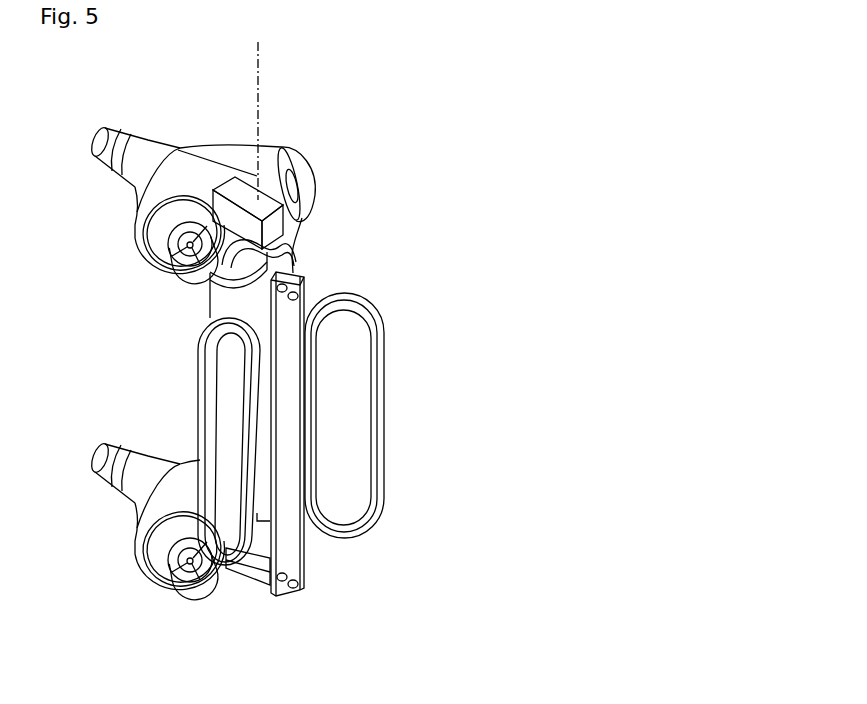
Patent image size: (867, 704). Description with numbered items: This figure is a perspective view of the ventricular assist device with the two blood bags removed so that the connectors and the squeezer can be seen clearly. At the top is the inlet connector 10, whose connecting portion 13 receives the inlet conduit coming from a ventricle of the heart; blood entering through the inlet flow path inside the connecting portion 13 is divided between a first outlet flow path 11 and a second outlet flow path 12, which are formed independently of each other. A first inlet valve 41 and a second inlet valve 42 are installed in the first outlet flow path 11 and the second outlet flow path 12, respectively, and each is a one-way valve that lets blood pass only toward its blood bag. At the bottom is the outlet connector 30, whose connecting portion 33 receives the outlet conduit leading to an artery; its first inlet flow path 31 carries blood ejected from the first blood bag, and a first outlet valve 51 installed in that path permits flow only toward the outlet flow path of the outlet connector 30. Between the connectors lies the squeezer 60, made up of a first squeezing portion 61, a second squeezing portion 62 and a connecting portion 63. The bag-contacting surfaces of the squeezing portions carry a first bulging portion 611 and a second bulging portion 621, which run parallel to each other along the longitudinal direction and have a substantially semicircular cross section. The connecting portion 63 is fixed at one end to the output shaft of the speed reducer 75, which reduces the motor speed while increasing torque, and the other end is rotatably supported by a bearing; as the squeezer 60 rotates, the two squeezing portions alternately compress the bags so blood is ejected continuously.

The inlet connector 10 is at (181, 127).
The first outlet flow path 11 is at (202, 270).
The second outlet flow path 12 is at (308, 190).
The connecting portion 13 is at (113, 160).
The outlet connector 30 is at (120, 519).
The first inlet flow path 31 is at (211, 579).
The connecting portion 33 is at (108, 478).
The first inlet valve 41 is at (186, 271).
The second inlet valve 42 is at (286, 207).
The first outlet valve 51 is at (187, 585).
The squeezer 60 is at (478, 488).
The first squeezing portion 61 is at (192, 416).
The second squeezing portion 62 is at (387, 446).
The connecting portion 63 is at (298, 556).
The speed reducer 75 is at (304, 288).
The first bulging portion 611 is at (196, 374).
The second bulging portion 621 is at (386, 383).